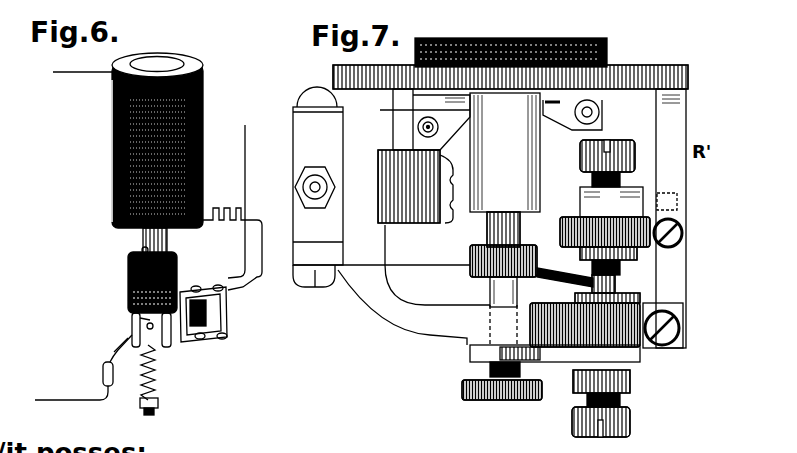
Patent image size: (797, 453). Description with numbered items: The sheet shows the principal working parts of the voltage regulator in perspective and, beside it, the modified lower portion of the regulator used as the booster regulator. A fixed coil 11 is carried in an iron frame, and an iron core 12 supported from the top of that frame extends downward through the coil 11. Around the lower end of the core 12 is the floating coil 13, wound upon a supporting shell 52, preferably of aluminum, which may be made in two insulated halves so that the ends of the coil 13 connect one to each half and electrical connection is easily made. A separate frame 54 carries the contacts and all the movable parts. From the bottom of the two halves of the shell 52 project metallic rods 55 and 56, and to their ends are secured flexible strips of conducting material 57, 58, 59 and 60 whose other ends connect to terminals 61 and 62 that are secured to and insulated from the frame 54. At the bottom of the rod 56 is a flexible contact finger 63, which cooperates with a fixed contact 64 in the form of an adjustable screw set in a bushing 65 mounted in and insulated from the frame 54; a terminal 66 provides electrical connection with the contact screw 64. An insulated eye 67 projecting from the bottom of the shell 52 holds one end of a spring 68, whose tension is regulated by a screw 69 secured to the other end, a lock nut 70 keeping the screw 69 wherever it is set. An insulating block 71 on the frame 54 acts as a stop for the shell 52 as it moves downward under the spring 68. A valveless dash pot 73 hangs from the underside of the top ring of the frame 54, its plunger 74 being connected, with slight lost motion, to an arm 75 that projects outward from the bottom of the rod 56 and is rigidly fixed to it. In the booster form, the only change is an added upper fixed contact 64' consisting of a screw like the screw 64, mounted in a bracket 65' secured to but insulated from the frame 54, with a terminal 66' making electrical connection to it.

In FIG. 6, the fixed coil 11 is at (110, 152).
In FIG. 6, the iron core 12 is at (170, 245).
In FIG. 6, the floating coil 13 is at (128, 282).
In FIG. 7, the floating coil 13 is at (608, 52).
In FIG. 6, the supporting shell 52 is at (142, 250).
In FIG. 7, the supporting shell 52 is at (605, 110).
In FIG. 7, the frame 54 is at (392, 318).
In FIG. 6, the metallic rod 55 is at (172, 345).
In FIG. 6, the metallic rod 56 is at (128, 300).
In FIG. 6, the flexible strip of conducting material 57 is at (182, 289).
In FIG. 7, the flexible strip of conducting material 57 is at (411, 119).
In FIG. 6, the flexible strip of conducting material 58 is at (206, 287).
In FIG. 6, the flexible strip of conducting material 59 is at (198, 341).
In FIG. 6, the flexible strip of conducting material 60 is at (146, 326).
In FIG. 7, the flexible strip of conducting material 60 is at (437, 265).
In FIG. 6, the terminal 61 is at (222, 318).
In FIG. 6, the terminal 62 is at (228, 304).
In FIG. 7, the terminal 62 is at (293, 142).
In FIG. 6, the flexible contact finger 63 is at (116, 346).
In FIG. 7, the flexible contact finger 63 is at (576, 283).
In FIG. 6, the fixed contact 64 is at (74, 381).
In FIG. 7, the fixed contact 64 is at (647, 293).
In FIG. 7, the upper fixed contact 64' is at (658, 275).
In FIG. 7, the bushing 65 is at (626, 325).
In FIG. 7, the bracket 65' is at (599, 226).
In FIG. 7, the terminal 66 is at (546, 399).
In FIG. 7, the terminal 66' is at (652, 178).
In FIG. 6, the eye 67 is at (140, 318).
In FIG. 6, the spring 68 is at (158, 370).
In FIG. 6, the screw 69 is at (160, 406).
In FIG. 7, the screw 69 is at (489, 370).
In FIG. 7, the lock nut 70 is at (470, 353).
In FIG. 7, the block of insulating material 71 is at (414, 224).
In FIG. 7, the valveless dash pot 73 is at (541, 143).
In FIG. 7, the plunger 74 is at (486, 232).
In FIG. 7, the arm 75 is at (470, 257).